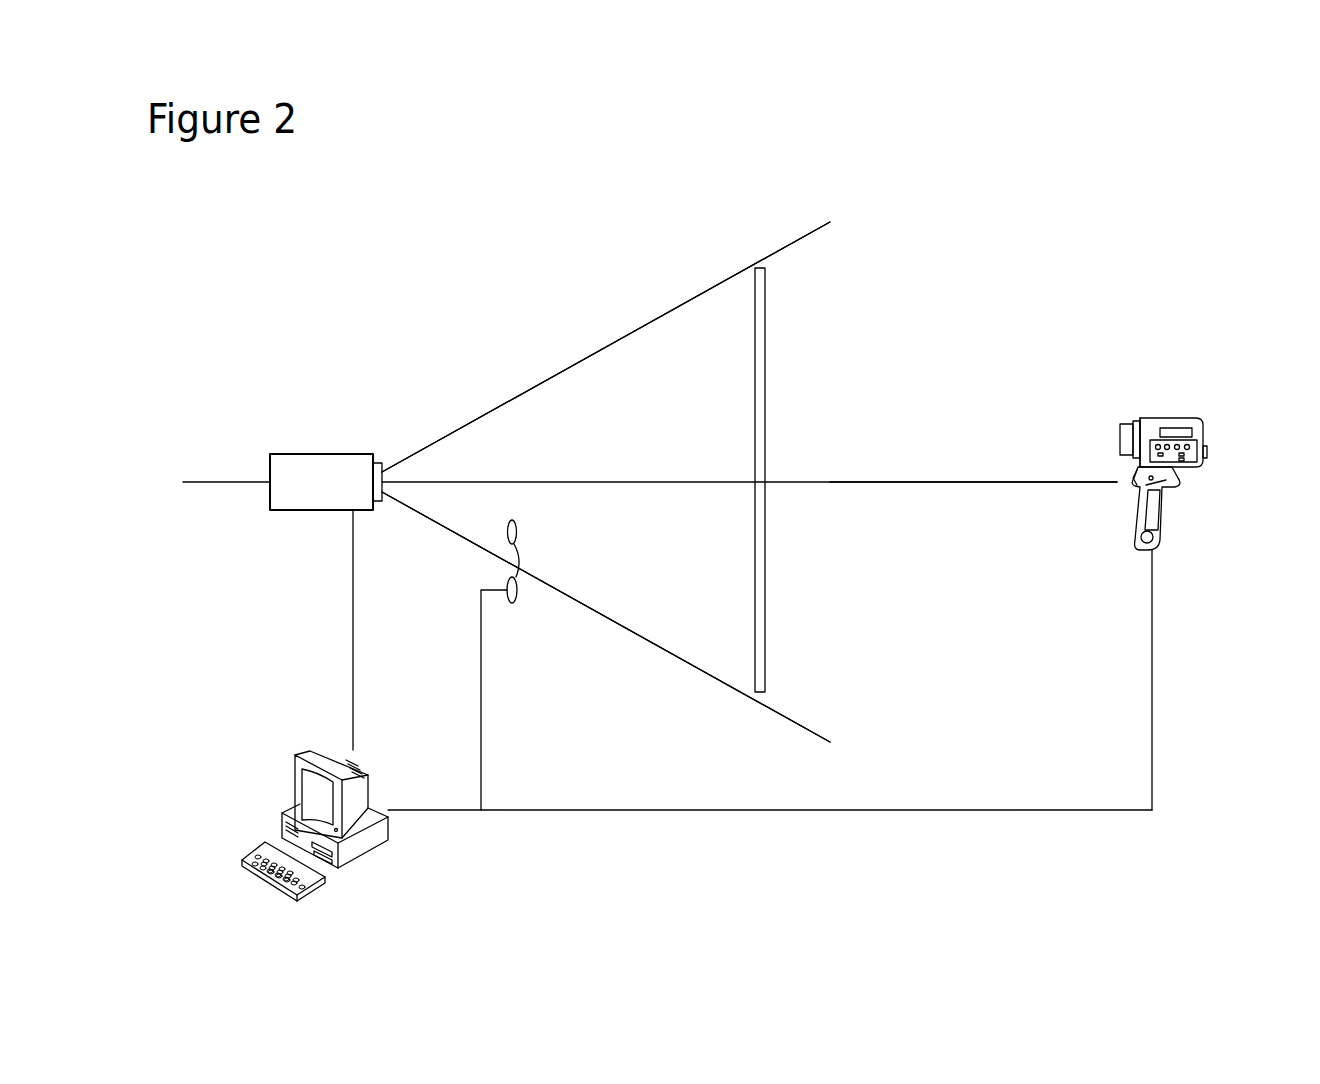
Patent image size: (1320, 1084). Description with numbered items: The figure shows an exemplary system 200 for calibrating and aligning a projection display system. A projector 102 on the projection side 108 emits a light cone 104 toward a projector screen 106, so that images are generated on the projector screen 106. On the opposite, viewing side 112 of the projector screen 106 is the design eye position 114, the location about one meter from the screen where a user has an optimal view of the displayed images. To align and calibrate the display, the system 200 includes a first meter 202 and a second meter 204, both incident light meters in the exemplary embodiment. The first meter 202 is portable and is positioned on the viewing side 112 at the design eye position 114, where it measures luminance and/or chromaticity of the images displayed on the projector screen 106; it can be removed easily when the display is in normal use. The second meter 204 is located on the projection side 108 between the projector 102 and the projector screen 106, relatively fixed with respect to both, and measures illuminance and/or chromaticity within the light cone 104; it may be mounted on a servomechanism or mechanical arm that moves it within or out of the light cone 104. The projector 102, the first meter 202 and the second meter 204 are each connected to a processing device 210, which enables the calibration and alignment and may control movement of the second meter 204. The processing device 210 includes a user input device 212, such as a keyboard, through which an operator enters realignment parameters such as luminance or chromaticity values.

The system 200 is at (958, 192).
The projector 102 is at (287, 454).
The light cone 104 is at (538, 387).
The projector screen 106 is at (768, 352).
The projection side 108 is at (600, 300).
The viewing side 112 is at (958, 329).
The design eye position 114 is at (1176, 396).
The first meter 202 is at (1182, 470).
The second meter 204 is at (520, 548).
The processing device 210 is at (365, 847).
The user input device 212 is at (256, 877).